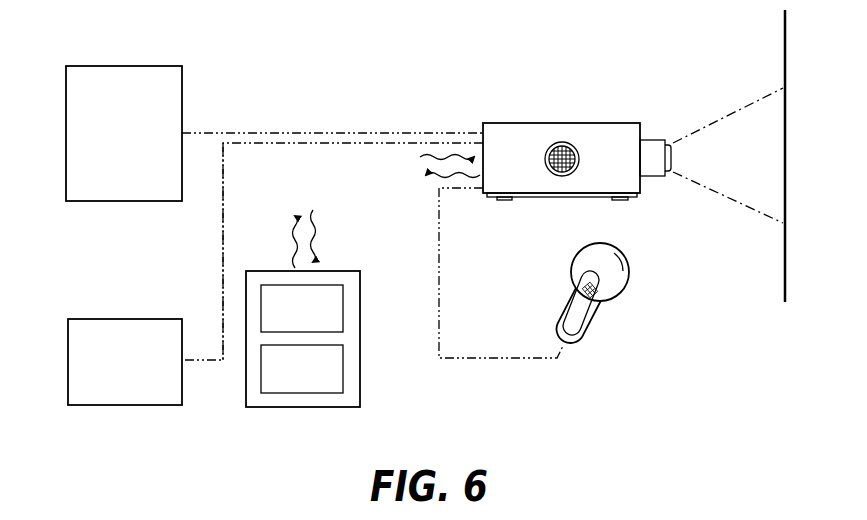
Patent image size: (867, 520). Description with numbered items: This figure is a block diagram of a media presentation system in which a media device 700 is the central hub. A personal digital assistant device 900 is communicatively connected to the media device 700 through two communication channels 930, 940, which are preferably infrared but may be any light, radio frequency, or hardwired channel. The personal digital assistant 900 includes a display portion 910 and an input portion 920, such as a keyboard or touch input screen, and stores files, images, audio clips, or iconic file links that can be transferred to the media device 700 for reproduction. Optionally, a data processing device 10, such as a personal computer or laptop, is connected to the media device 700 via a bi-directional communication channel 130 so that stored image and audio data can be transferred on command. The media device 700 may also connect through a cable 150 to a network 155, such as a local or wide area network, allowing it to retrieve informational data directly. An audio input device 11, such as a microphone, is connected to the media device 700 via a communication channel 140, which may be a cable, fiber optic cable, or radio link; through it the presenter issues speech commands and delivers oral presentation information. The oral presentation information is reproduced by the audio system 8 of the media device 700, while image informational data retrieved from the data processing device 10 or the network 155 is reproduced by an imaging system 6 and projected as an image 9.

The data processing device 10 is at (125, 64).
The bi-directional communication channel 130 is at (306, 130).
The cable 150 is at (223, 283).
The network 155 is at (125, 405).
The personal digital assistant device 900 is at (362, 390).
The display portion 910 is at (343, 310).
The input portion 920 is at (343, 368).
The communication channel 940 is at (288, 203).
The communication channel 930 is at (415, 150).
The communication channel 140 is at (440, 290).
The media device 700 is at (560, 122).
The audio system 8 is at (562, 177).
The imaging system 6 is at (671, 158).
The image 9 is at (783, 45).
The audio input device 11 is at (598, 303).